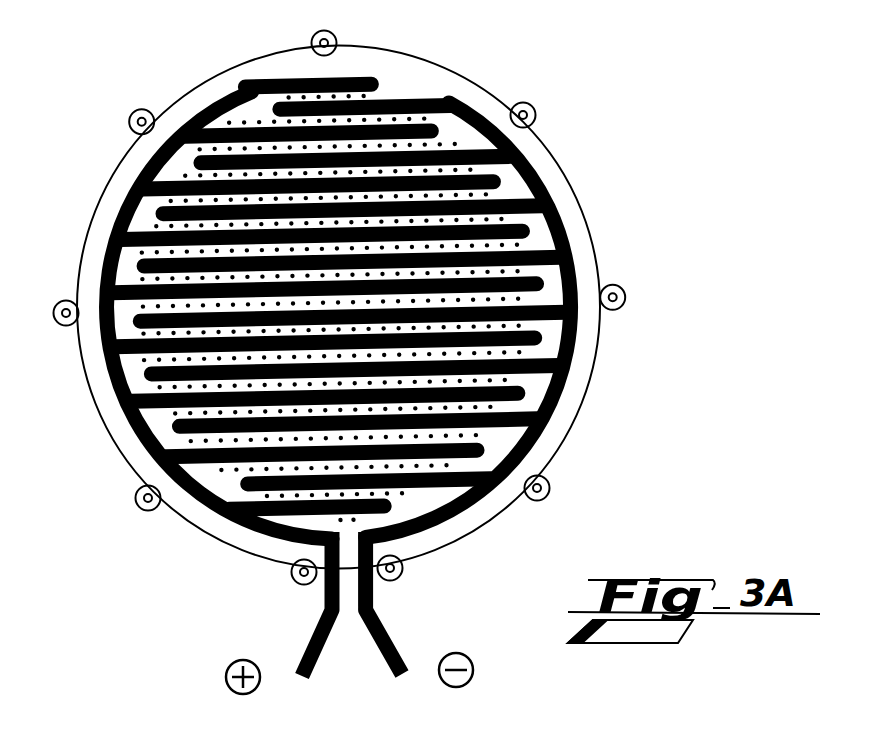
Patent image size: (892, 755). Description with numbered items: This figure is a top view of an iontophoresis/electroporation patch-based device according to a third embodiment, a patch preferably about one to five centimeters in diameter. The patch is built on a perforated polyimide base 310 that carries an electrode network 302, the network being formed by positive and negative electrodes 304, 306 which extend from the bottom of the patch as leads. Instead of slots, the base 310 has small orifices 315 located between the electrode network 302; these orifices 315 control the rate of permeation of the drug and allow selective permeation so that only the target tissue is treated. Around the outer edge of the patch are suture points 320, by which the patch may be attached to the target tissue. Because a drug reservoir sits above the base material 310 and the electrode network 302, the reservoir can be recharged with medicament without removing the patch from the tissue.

The electrode network 302 is at (226, 102).
The positive electrode 304 is at (320, 630).
The negative electrode 306 is at (384, 625).
The perforated polyimide base 310 is at (586, 384).
The orifices 315 is at (366, 97).
The suture points 320 is at (537, 118).